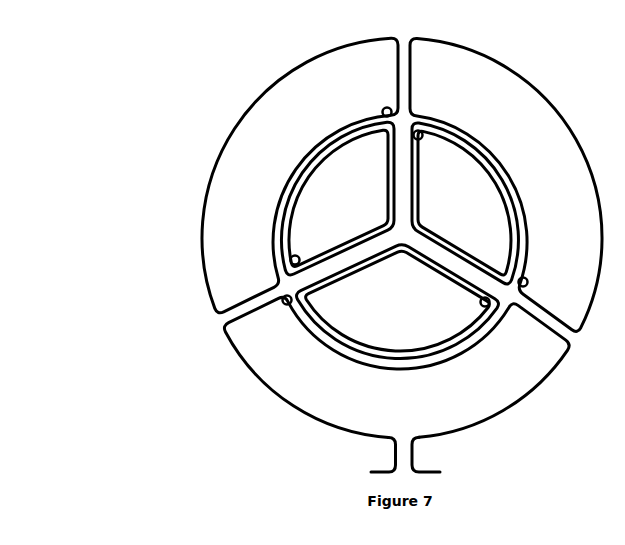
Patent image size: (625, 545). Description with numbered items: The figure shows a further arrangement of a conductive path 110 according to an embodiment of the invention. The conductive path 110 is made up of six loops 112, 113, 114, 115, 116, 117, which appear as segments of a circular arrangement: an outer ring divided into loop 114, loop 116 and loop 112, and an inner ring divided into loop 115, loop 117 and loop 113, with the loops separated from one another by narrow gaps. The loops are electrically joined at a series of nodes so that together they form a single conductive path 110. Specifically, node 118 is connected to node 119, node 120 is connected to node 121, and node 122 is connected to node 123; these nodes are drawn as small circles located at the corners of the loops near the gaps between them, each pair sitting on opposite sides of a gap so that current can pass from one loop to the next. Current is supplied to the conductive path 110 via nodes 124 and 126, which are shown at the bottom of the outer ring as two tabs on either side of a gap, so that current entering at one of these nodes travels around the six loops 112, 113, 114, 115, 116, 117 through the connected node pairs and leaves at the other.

The conductive path 110 is at (170, 446).
The loop 112 is at (518, 380).
The loop 113 is at (397, 311).
The loop 114 is at (232, 156).
The loop 115 is at (333, 183).
The loop 116 is at (505, 97).
The loop 117 is at (465, 210).
The node 118 is at (284, 308).
The node 119 is at (301, 257).
The node 120 is at (385, 105).
The node 121 is at (421, 142).
The node 122 is at (530, 280).
The node 123 is at (482, 300).
The node 124 is at (371, 472).
The node 126 is at (447, 465).